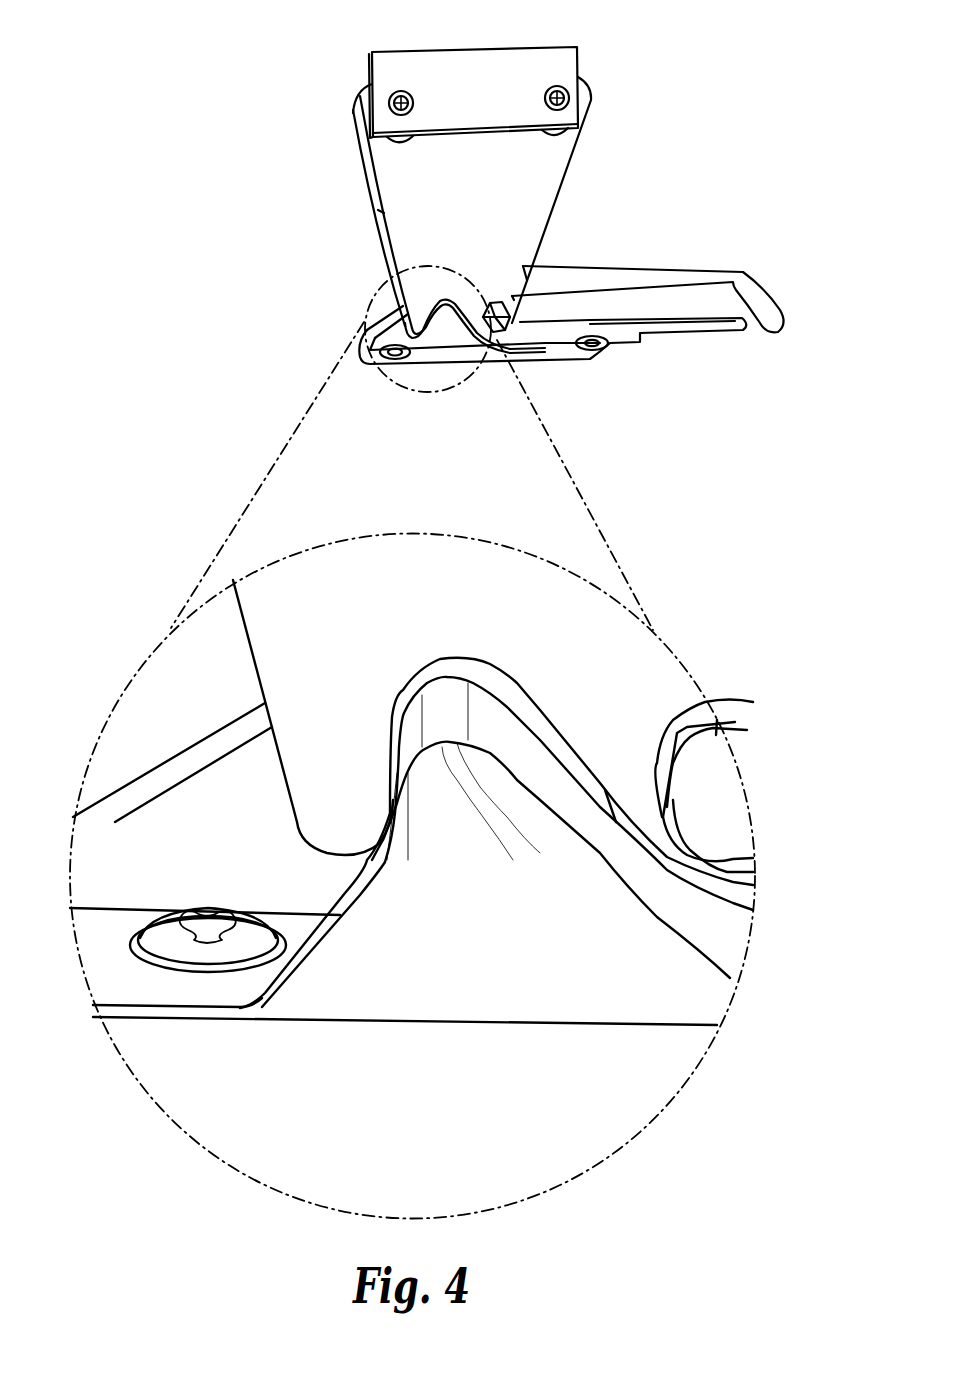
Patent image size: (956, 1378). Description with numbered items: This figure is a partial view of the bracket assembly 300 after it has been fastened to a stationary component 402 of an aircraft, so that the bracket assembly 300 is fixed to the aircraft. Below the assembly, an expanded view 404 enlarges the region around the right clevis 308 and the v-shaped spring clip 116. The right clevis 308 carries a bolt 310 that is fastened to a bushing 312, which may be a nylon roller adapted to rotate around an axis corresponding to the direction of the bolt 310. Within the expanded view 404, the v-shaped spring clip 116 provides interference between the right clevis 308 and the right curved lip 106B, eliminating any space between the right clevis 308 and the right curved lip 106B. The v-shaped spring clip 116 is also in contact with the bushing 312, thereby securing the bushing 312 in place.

The bracket assembly 300 is at (290, 108).
The stationary component 402 is at (463, 70).
The expanded view 404 is at (305, 546).
The right clevis 308 is at (457, 658).
The v-shaped spring clip 116 is at (480, 727).
The bolt 310 is at (703, 702).
The bushing 312 is at (660, 857).
The right curved lip 106B is at (513, 863).